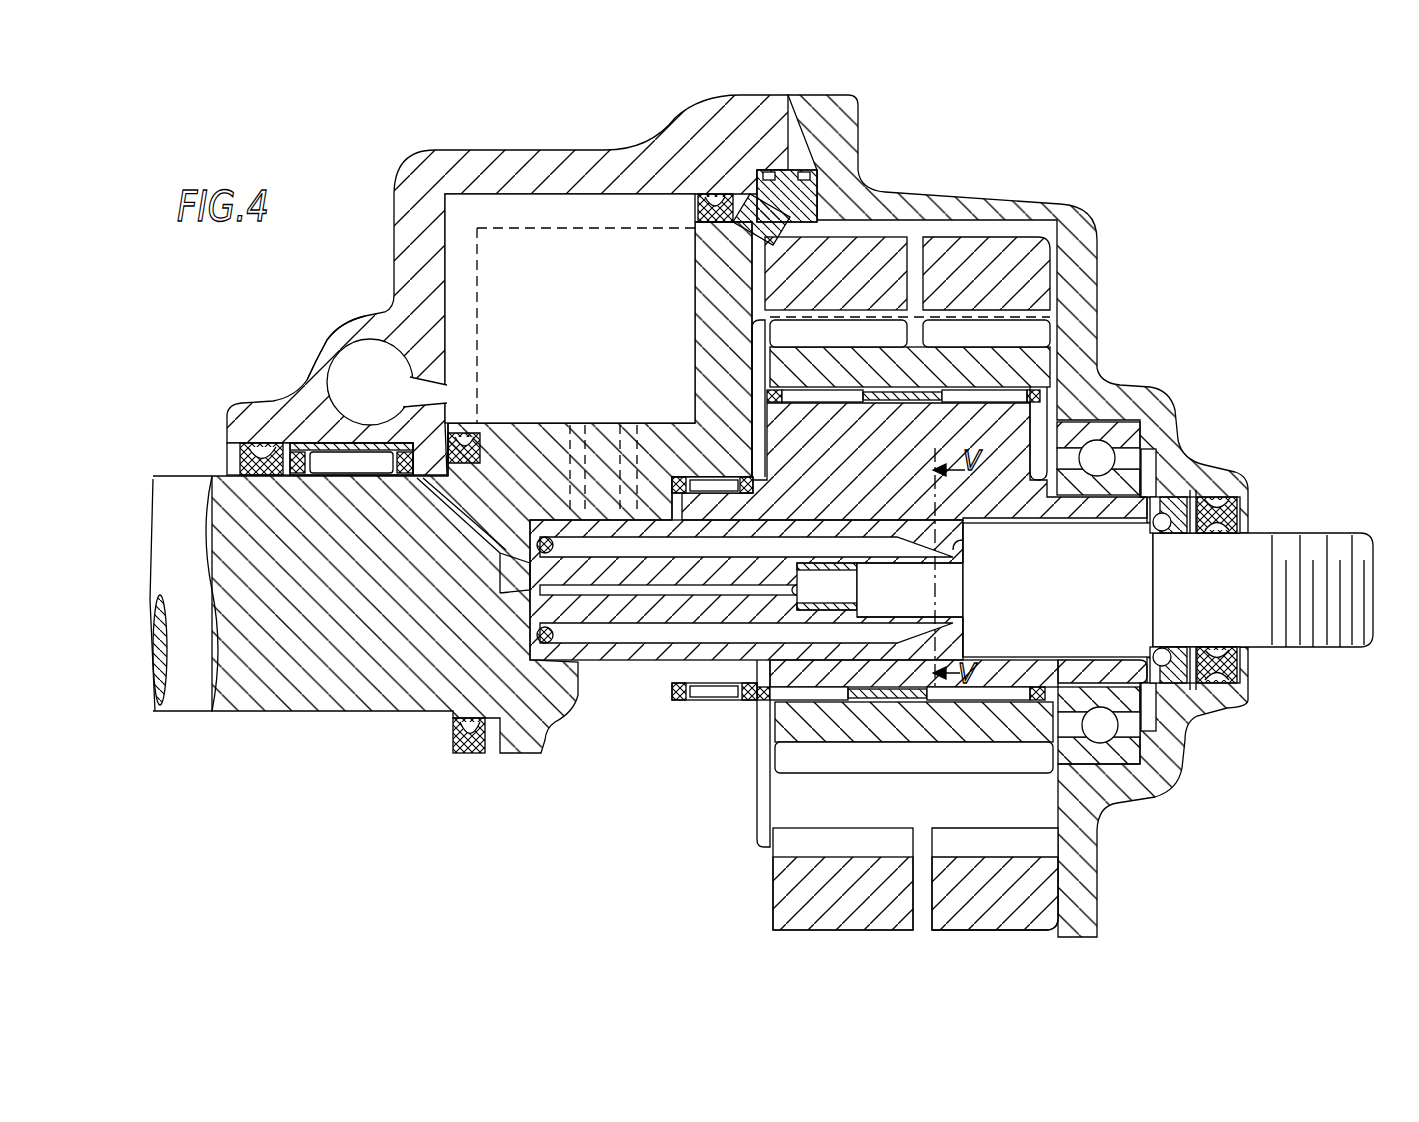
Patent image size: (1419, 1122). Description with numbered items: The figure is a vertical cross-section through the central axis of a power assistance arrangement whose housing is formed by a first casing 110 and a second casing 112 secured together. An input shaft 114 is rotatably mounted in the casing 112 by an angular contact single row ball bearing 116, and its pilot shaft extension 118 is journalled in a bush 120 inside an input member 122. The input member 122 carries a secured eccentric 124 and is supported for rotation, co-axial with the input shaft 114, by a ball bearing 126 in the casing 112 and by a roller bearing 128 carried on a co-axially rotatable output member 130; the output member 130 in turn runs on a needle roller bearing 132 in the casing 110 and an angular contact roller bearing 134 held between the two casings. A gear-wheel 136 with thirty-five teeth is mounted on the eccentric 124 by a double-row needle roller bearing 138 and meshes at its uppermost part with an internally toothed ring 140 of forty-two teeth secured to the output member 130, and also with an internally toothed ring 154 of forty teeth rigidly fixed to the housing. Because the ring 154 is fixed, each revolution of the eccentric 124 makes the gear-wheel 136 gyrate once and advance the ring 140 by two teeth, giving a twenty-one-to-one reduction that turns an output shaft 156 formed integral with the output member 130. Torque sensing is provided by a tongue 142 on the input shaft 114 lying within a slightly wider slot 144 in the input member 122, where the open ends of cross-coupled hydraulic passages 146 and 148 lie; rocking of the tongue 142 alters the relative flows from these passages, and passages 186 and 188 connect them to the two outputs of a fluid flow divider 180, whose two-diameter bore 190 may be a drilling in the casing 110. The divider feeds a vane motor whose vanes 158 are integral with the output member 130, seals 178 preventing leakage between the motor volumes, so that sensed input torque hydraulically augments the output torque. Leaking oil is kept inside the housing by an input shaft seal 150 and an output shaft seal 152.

The first casing 110 is at (700, 125).
The second casing 112 is at (818, 150).
The input shaft 114 is at (1320, 623).
The angular contact single row ball bearing 116 is at (1176, 500).
The pilot shaft extension 118 is at (827, 586).
The bush 120 is at (810, 557).
The input member 122 is at (746, 590).
The eccentric 124 is at (990, 477).
The ball bearing 126 is at (1123, 433).
The roller bearing 128 is at (752, 485).
The output member 130 is at (600, 371).
The needle roller bearing 132 is at (364, 478).
The angular contact roller bearing 134 is at (826, 194).
The gear-wheel 136 is at (1027, 367).
The double-row needle roller bearing 138 is at (827, 404).
The internally toothed ring 140 is at (887, 247).
The tongue 142 is at (910, 590).
The slot 144 is at (960, 545).
The hydraulic passage 146 is at (863, 547).
The hydraulic passage 148 is at (703, 633).
The input shaft seal 150 is at (1240, 500).
The output shaft seal 152 is at (237, 450).
The internally toothed ring 154 is at (1003, 257).
The output shaft 156 is at (363, 673).
The vanes 158 is at (570, 308).
The seals 178 is at (558, 210).
The fluid flow divider 180 is at (351, 342).
The passage 186 is at (580, 425).
The passage 188 is at (632, 425).
The two-diameter bore 190 is at (358, 424).